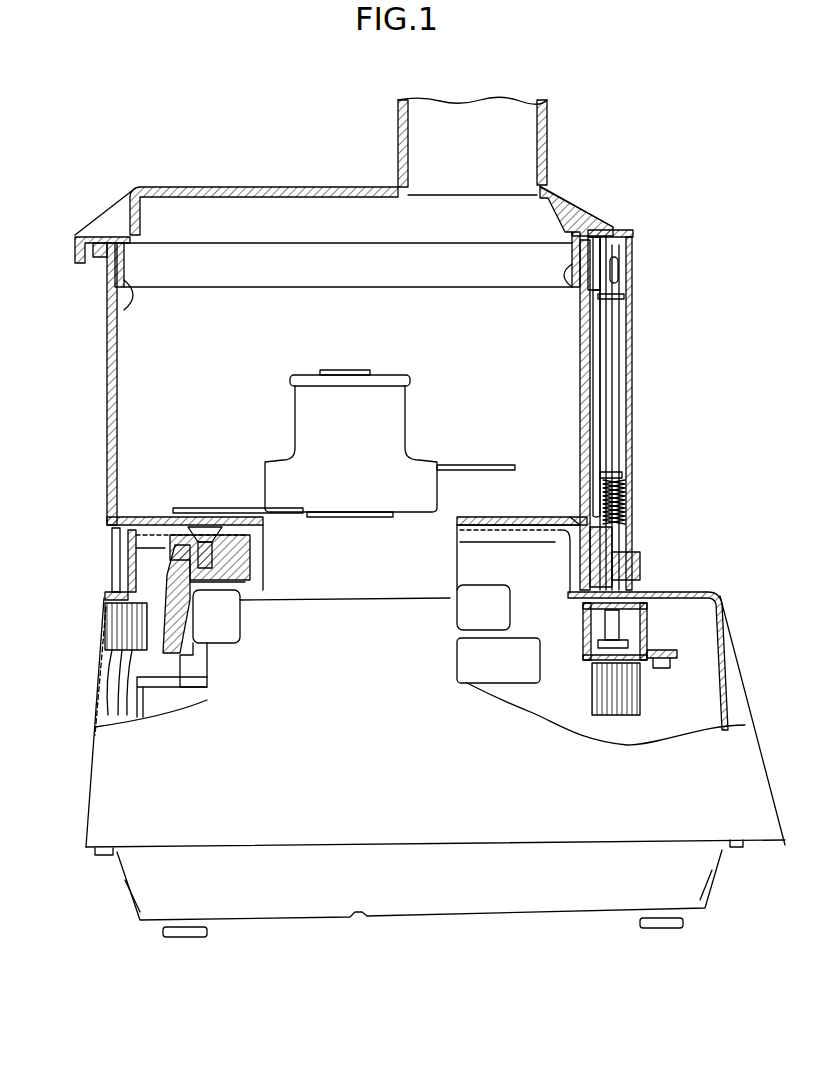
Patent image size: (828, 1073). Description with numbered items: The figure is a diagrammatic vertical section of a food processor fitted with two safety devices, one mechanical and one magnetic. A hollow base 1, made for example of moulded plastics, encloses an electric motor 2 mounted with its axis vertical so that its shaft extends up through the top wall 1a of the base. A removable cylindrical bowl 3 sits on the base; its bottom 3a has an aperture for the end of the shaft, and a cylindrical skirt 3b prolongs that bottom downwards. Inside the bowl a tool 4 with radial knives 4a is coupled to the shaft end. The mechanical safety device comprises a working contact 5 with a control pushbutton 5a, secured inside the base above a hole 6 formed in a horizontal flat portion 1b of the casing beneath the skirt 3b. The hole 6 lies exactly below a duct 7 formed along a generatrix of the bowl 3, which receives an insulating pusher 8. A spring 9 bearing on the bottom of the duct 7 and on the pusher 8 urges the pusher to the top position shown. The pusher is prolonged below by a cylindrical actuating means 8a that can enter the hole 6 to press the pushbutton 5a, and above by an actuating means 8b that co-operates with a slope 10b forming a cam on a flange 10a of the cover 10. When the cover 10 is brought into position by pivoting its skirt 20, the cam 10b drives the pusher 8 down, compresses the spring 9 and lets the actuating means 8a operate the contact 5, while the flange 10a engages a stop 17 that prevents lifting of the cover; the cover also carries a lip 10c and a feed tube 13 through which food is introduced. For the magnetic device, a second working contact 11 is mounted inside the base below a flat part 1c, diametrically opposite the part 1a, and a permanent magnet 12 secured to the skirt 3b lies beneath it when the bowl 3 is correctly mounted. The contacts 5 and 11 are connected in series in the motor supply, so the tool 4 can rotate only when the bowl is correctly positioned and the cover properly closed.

The hollow base 1 is at (760, 612).
The top wall 1a is at (505, 540).
The horizontal flat portion 1b is at (700, 593).
The flat part 1c is at (110, 598).
The electric motor 2 is at (497, 608).
The bowl 3 is at (596, 386).
The bottom 3a is at (497, 512).
The cylindrical skirt 3b is at (568, 514).
The tool 4 is at (410, 412).
The radial knives 4a is at (200, 506).
The working contact 5 is at (622, 690).
The control pushbutton 5a is at (640, 632).
The hole 6 is at (640, 570).
The duct 7 is at (632, 400).
The pusher 8 is at (627, 325).
The cylindrical actuating means 8a is at (628, 548).
The actuating means 8b is at (616, 268).
The spring 9 is at (630, 492).
The cover 10 is at (300, 187).
The flange 10a is at (600, 240).
The slope 10b is at (617, 248).
The lid hook 10c is at (75, 250).
The second working contact 11 is at (132, 626).
The permanent magnet 12 is at (118, 545).
The feed tube 13 is at (547, 115).
The stop 17 is at (100, 258).
The skirt 20 is at (122, 300).